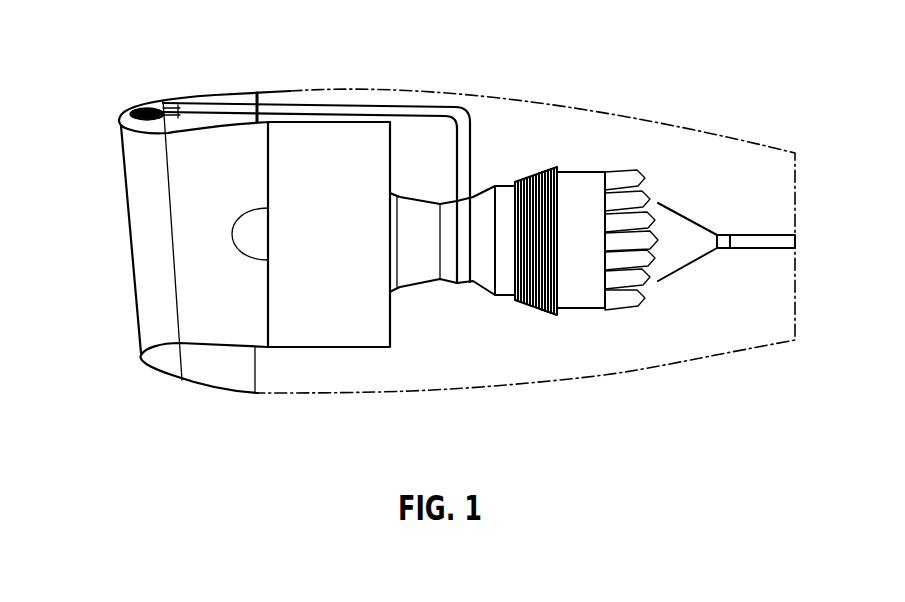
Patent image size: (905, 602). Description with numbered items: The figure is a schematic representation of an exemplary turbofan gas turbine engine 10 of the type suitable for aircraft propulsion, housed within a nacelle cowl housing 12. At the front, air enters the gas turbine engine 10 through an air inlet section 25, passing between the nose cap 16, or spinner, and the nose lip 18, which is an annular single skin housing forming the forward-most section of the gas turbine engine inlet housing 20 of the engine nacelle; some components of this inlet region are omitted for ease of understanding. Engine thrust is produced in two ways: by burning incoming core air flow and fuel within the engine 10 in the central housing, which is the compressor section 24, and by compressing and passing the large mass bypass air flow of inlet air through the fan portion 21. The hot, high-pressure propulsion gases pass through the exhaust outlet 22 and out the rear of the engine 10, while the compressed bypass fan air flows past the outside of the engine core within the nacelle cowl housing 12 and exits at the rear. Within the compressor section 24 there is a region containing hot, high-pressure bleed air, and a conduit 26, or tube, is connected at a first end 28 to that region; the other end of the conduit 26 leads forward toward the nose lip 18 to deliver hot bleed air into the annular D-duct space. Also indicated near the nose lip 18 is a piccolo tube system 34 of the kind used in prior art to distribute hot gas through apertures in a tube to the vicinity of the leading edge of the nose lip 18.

The gas turbine engine 10 is at (159, 40).
The nacelle cowl housing 12 is at (538, 383).
The nose cap 16 is at (247, 257).
The nose lip 18 is at (140, 362).
The gas turbine engine inlet housing 20 is at (177, 103).
The fan portion 21 is at (348, 337).
The exhaust outlet 22 is at (698, 260).
The compressor section 24 is at (467, 284).
The air inlet section 25 is at (197, 230).
The conduit 26 is at (274, 101).
The first end 28 is at (471, 167).
The piccolo tube system 34 is at (138, 112).